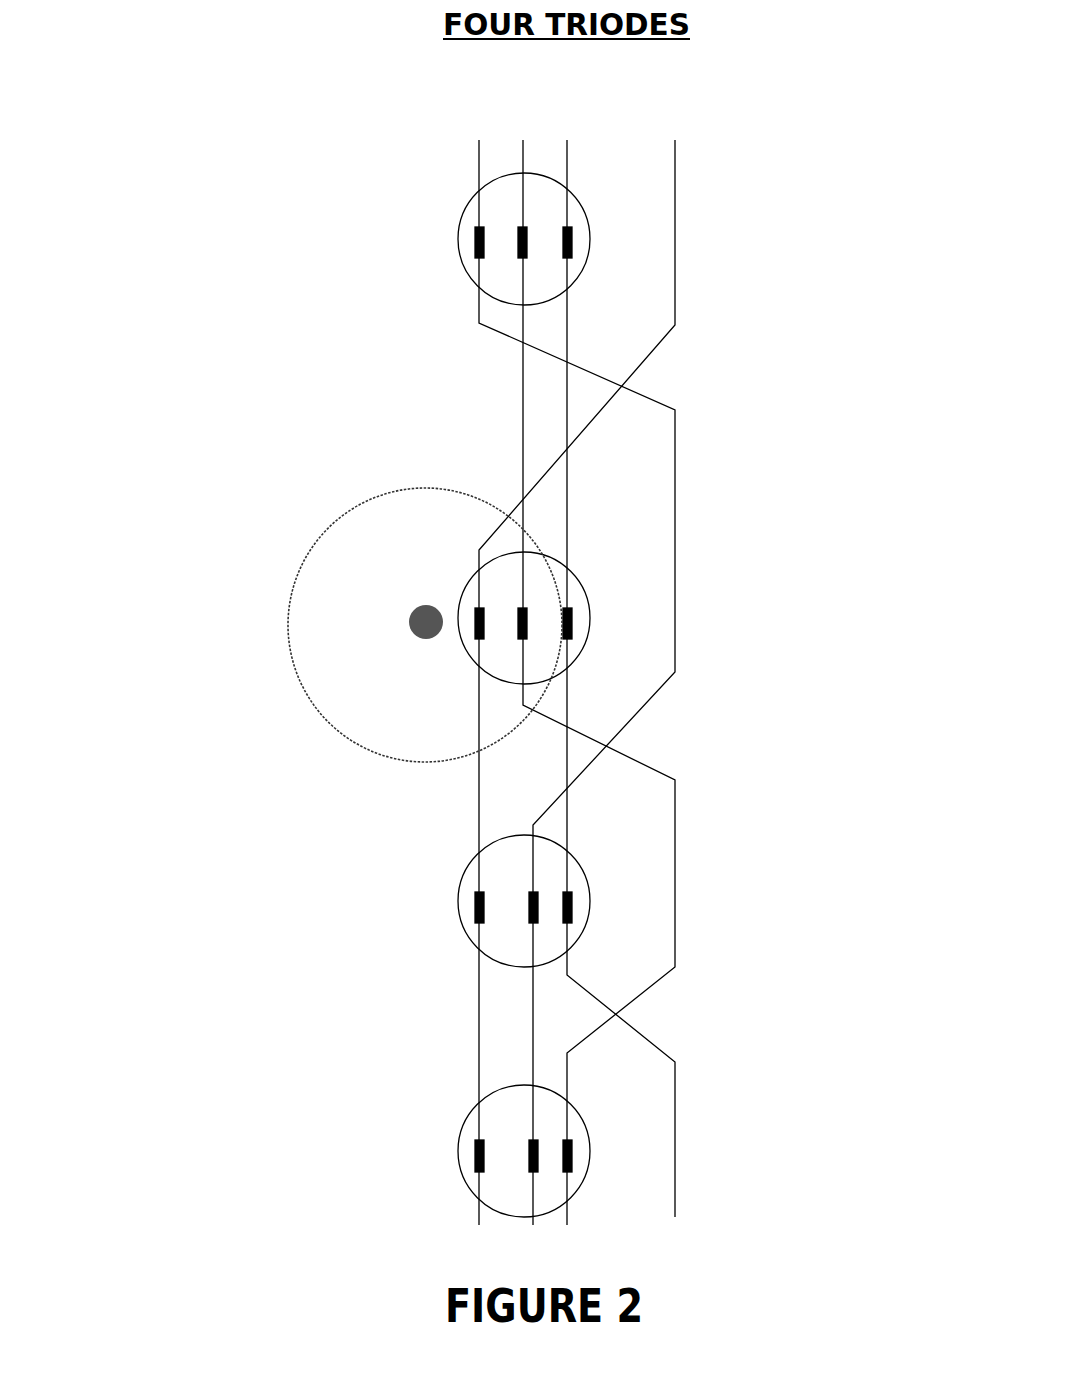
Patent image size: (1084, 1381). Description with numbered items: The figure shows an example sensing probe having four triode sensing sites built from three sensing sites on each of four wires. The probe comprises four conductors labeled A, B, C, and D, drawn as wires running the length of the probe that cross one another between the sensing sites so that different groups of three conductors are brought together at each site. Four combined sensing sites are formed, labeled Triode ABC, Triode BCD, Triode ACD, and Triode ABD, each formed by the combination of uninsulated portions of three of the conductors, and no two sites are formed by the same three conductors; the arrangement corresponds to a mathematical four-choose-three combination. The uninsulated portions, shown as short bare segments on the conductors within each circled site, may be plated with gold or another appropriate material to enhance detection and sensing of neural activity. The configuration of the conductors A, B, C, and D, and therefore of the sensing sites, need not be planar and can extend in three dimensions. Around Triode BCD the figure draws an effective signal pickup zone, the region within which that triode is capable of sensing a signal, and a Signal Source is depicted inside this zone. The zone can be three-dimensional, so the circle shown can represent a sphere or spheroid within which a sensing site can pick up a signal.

The conductor A is at (573, 660).
The conductor B is at (594, 660).
The conductor C is at (617, 656).
The conductor D is at (584, 660).
The triode sensing site ABC Triode ABC is at (455, 223).
The triode sensing site BCD Triode BCD is at (473, 572).
The triode sensing site ACD Triode ACD is at (455, 890).
The triode sensing site ABD Triode ABD is at (455, 1140).
The signal source Signal Source is at (411, 614).